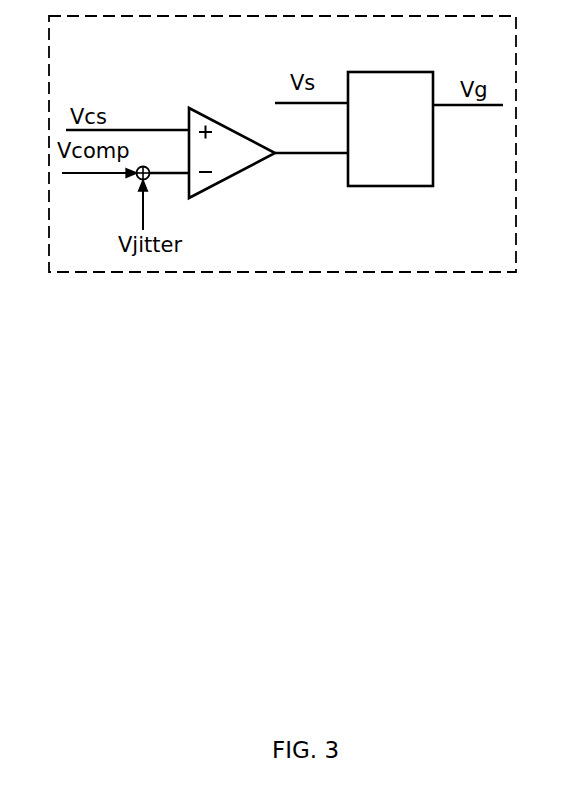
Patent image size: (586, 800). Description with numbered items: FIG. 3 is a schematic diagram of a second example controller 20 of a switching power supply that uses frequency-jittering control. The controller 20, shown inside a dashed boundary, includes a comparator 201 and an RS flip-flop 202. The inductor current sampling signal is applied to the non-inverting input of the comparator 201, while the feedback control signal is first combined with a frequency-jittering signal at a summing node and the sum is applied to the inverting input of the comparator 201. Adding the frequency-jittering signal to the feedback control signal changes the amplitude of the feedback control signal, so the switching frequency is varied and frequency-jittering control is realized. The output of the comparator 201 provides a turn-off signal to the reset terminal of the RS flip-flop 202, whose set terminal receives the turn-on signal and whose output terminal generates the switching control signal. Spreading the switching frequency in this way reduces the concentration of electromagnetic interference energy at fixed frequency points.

The controller 20 is at (496, 56).
The comparator 201 is at (254, 164).
The RS flip-flop 202 is at (433, 143).